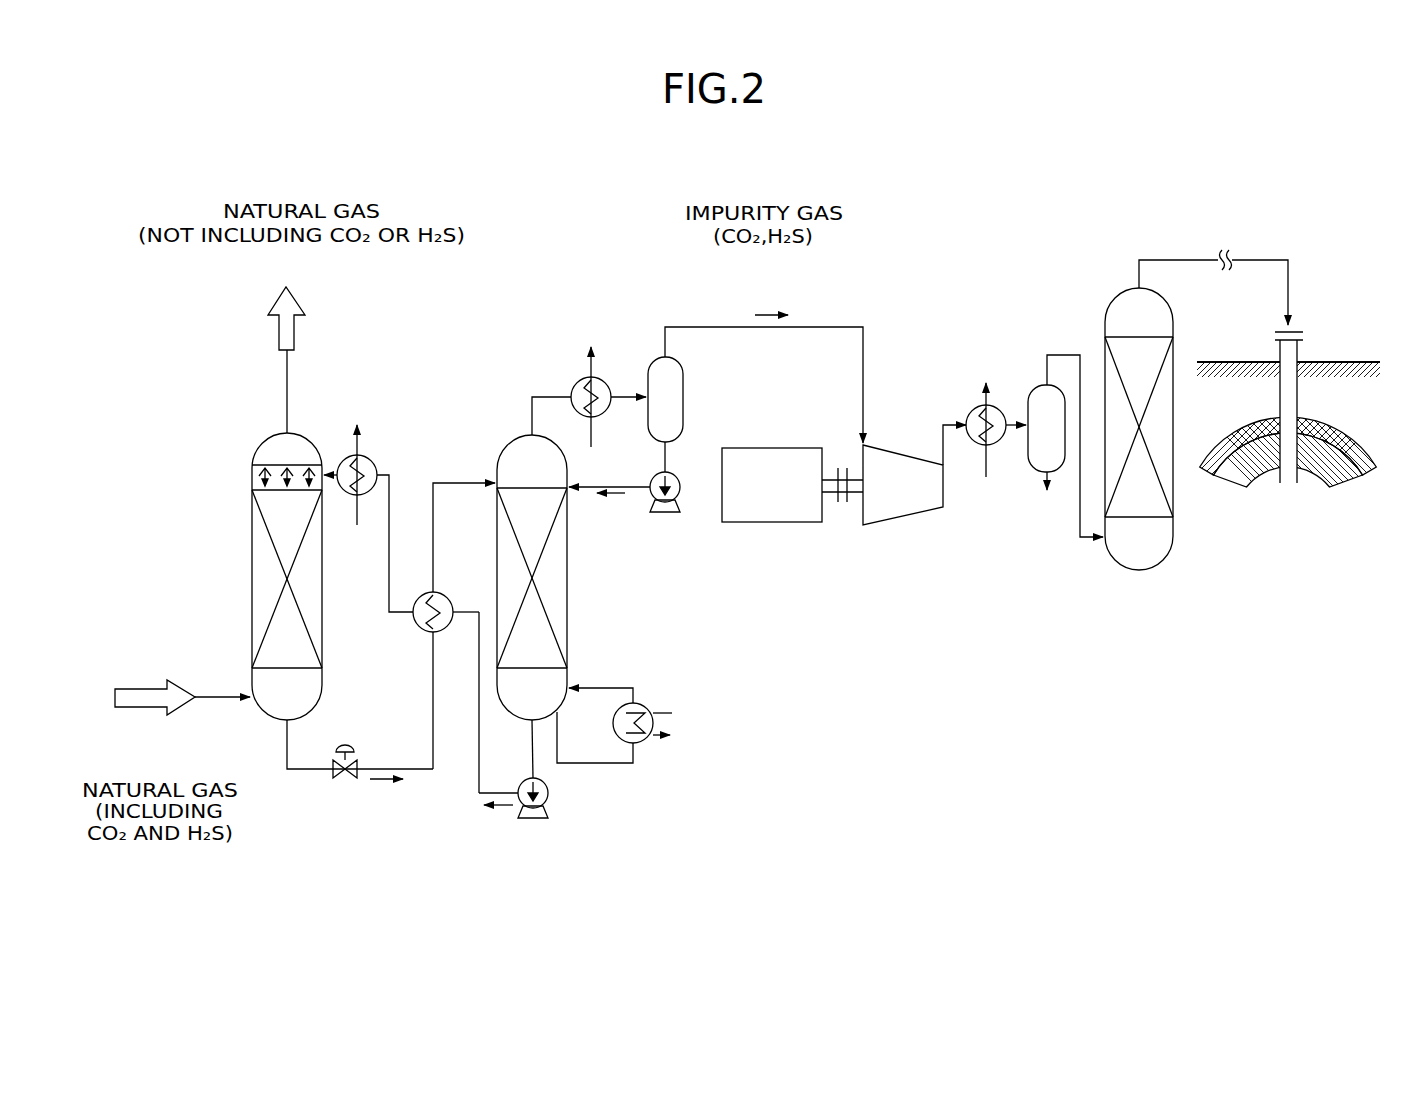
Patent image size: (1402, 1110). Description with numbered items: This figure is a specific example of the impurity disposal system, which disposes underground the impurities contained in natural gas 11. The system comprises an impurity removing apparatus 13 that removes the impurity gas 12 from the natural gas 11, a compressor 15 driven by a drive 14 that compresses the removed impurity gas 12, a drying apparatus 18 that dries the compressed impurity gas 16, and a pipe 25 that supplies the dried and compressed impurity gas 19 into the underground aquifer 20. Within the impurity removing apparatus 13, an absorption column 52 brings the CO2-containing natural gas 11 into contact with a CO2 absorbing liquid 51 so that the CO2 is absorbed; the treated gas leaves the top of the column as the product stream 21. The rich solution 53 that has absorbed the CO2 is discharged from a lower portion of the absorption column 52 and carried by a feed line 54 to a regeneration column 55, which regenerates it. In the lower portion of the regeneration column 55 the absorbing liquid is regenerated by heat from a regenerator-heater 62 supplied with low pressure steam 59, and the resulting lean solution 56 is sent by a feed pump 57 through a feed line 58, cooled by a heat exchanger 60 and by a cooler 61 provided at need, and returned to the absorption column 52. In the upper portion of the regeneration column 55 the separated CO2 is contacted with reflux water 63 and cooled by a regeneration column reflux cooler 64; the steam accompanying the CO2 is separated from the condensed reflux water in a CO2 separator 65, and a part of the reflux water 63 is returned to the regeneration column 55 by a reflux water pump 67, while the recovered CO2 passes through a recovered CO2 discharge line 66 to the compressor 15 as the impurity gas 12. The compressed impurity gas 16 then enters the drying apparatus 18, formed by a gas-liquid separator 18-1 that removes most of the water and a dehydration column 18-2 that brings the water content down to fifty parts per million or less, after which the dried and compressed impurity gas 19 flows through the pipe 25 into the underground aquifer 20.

The natural gas 11 is at (148, 710).
The impurity gas 12 is at (766, 312).
The impurity removing apparatus 13 is at (454, 388).
The drive 14 is at (770, 448).
The compressor 15 is at (905, 542).
The compressed impurity gas 16 is at (939, 420).
The drying apparatus 18 is at (1102, 280).
The gas-liquid separator 18-1 is at (1031, 474).
The dehydration column 18-2 is at (1142, 572).
The dried and compressed impurity gas 19 is at (1265, 254).
The underground aquifer 20 is at (1267, 486).
The purified natural gas 21 is at (288, 285).
The pipe 25 is at (1300, 395).
The CO2 absorbing liquid 51 is at (263, 478).
The absorption column 52 is at (252, 543).
The rich solution 53 is at (393, 782).
The feed line 54 is at (430, 773).
The regeneration column 55 is at (567, 582).
The lean solution 56 is at (507, 808).
The feed pump 57 is at (550, 792).
The feed line 58 is at (472, 792).
The low pressure steam 59 is at (660, 712).
The heat exchanger 60 is at (445, 597).
The cooler 61 is at (370, 462).
The regenerator-heater 62 is at (644, 744).
The reflux water 63 is at (616, 497).
The regeneration column reflux cooler 64 is at (600, 386).
The CO2 separator 65 is at (684, 389).
The recovered CO2 discharge line 66 is at (699, 328).
The reflux water pump 67 is at (679, 499).